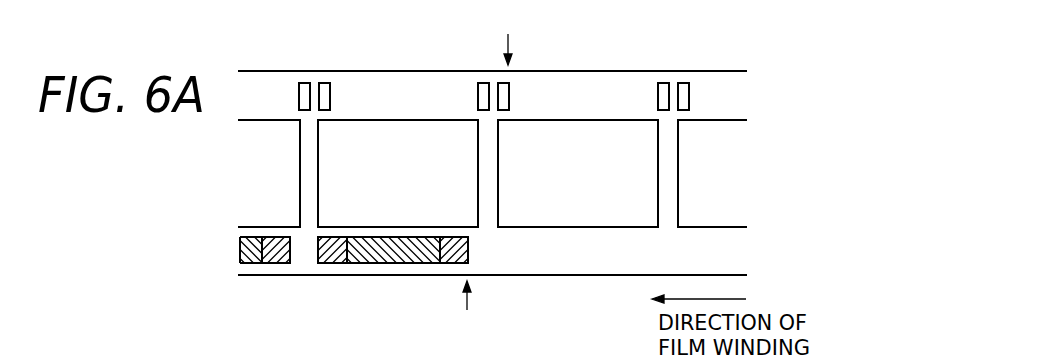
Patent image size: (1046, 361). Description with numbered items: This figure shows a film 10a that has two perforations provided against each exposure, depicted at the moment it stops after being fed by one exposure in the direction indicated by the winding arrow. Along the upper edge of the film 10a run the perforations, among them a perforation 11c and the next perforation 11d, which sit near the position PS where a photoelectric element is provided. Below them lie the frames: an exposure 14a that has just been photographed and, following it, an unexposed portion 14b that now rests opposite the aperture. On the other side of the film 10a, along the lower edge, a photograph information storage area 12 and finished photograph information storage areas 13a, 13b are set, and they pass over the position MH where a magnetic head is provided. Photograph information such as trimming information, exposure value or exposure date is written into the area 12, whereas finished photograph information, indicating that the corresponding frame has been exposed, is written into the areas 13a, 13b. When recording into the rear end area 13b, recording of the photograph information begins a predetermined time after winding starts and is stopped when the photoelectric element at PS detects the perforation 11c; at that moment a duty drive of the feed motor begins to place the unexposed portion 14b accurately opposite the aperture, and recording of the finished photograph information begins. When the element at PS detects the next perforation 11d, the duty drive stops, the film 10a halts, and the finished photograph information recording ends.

The film 10a is at (678, 71).
The perforation 11c is at (481, 82).
The perforation 11d is at (509, 89).
The photograph information storage area 12 is at (395, 264).
The finished photograph information storage area 13a is at (333, 262).
The finished photograph information storage area 13b is at (270, 264).
The exposure 14a is at (390, 120).
The unexposed portion 14b is at (593, 120).
The photoelectric element position PS is at (510, 37).
The magnetic head position MH is at (467, 313).